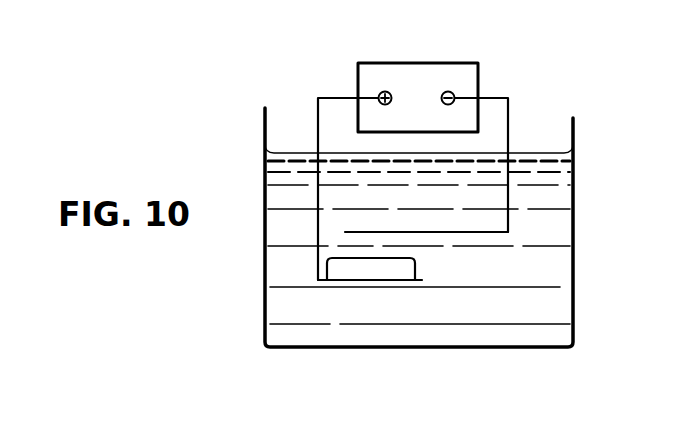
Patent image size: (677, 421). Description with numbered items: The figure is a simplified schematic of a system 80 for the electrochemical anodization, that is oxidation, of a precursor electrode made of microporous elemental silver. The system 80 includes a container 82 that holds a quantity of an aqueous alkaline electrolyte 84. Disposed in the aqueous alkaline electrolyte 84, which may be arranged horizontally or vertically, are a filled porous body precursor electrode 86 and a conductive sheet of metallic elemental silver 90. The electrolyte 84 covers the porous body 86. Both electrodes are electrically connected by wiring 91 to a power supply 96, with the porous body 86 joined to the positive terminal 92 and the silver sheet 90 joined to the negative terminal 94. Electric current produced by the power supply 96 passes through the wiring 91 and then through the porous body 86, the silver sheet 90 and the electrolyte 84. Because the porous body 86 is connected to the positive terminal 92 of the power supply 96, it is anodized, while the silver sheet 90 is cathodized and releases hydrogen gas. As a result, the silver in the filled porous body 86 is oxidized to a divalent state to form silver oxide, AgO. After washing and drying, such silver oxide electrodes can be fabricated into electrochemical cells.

The system 80 is at (606, 158).
The container 82 is at (265, 134).
The aqueous alkaline electrolyte 84 is at (278, 215).
The filled porous body precursor electrode 86 is at (327, 268).
The conductive sheet of metallic elemental silver 90 is at (477, 233).
The wiring 91 is at (508, 122).
The positive terminal 92 is at (380, 94).
The negative terminal 94 is at (455, 93).
The power supply 96 is at (400, 64).